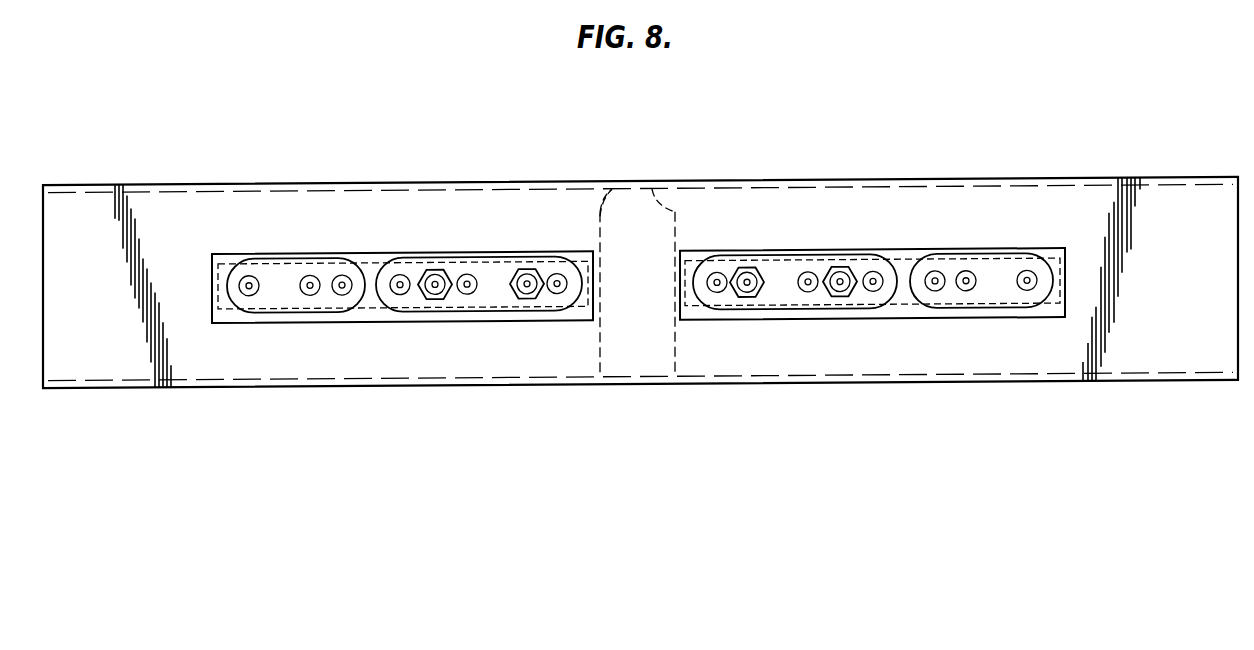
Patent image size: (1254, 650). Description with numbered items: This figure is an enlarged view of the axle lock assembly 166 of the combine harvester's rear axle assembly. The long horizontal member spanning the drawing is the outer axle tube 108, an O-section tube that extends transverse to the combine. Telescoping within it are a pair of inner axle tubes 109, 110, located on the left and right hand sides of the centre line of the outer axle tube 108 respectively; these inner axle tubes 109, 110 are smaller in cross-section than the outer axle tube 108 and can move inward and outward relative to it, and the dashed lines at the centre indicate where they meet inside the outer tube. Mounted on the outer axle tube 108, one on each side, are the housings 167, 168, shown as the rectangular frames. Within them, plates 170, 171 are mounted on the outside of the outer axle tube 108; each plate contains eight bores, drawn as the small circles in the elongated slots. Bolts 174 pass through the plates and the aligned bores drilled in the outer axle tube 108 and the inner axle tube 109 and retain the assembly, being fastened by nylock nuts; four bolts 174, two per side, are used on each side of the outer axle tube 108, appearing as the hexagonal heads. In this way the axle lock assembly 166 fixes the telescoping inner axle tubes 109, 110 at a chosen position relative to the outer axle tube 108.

The outer axle tube 108 is at (695, 181).
The inner axle tube 109 is at (650, 181).
The inner axle tube 110 is at (612, 181).
The axle lock assembly 166 is at (493, 230).
The housing 167 is at (575, 251).
The housing 168 is at (783, 251).
The plate 170 is at (290, 310).
The plate 171 is at (781, 310).
The bolt 174 is at (445, 268).